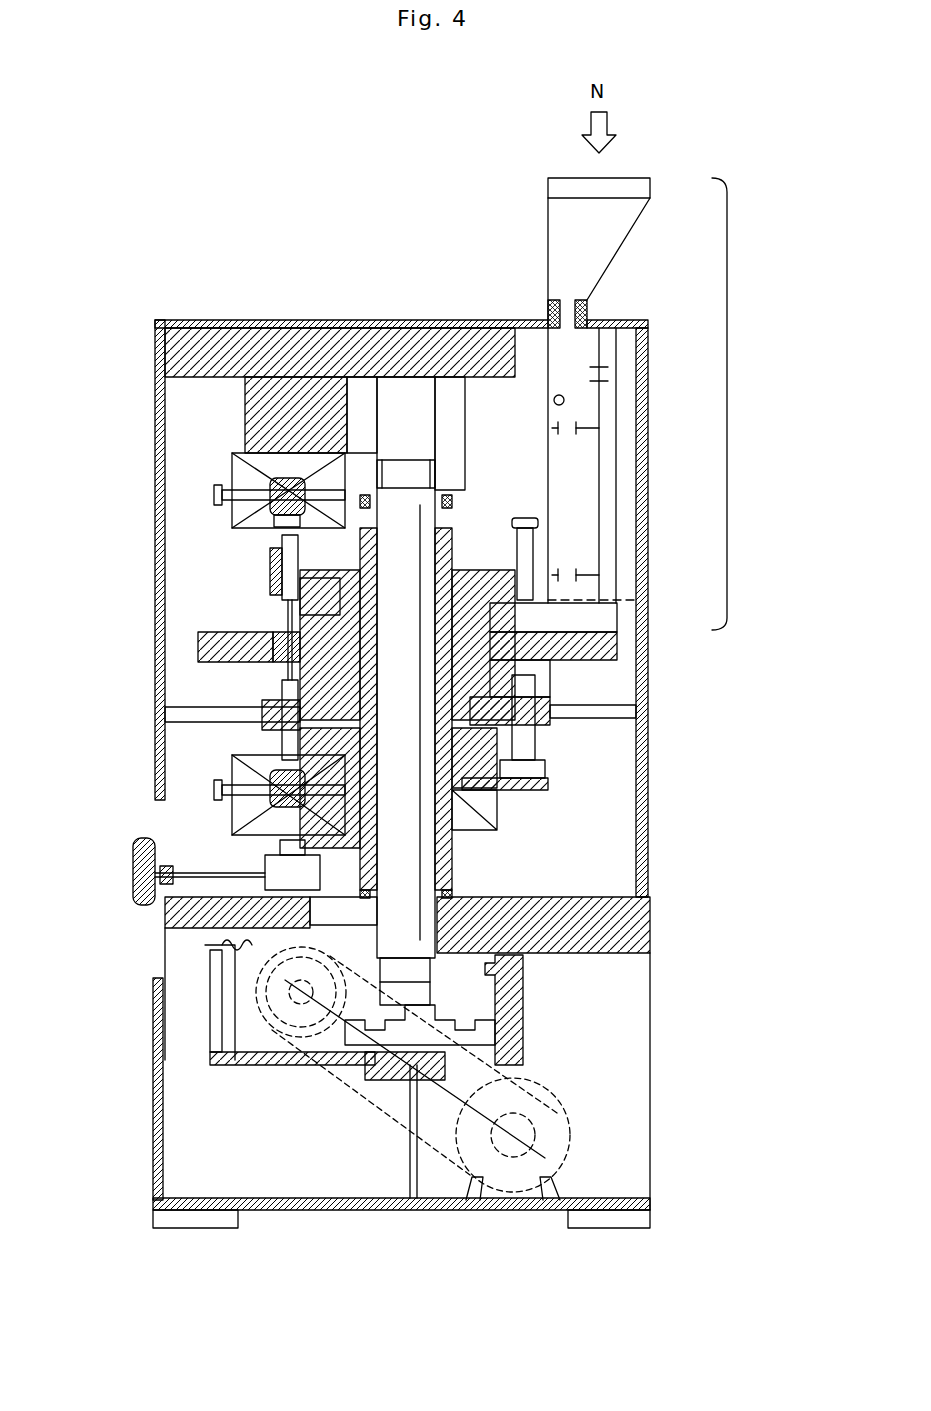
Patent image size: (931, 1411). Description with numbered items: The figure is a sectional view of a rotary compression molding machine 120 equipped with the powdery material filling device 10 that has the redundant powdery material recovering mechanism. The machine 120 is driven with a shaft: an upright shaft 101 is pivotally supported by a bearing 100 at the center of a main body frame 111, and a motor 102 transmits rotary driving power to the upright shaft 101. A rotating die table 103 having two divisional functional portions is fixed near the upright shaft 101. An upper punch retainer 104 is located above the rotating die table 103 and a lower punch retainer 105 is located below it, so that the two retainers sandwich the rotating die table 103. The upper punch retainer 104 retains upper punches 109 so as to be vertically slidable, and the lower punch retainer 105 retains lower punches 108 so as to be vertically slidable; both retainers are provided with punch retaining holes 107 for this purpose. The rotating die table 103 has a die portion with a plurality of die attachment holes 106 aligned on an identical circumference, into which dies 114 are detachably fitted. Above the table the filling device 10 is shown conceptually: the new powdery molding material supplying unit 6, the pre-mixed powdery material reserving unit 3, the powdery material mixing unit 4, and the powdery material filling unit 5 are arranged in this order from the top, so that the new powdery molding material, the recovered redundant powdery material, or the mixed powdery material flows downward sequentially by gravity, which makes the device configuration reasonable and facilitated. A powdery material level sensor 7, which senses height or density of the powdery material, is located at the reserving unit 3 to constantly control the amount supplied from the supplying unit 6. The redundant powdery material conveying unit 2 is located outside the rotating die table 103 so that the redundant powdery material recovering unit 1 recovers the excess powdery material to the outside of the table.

The redundant powdery material recovering unit 1 is at (600, 600).
The redundant powdery material conveying unit 2 is at (607, 527).
The pre-mixed powdery material reserving unit 3 is at (570, 360).
The powdery material mixing unit 4 is at (565, 480).
The powdery material filling unit 5 is at (575, 622).
The new powdery molding material supplying unit 6 is at (570, 247).
The powdery material level sensor 7 is at (565, 400).
The powdery material filling device 10 is at (728, 405).
The bearing 100 is at (523, 1075).
The upright shaft 101 is at (415, 810).
The motor 102 is at (555, 1155).
The rotating die table 103 is at (600, 660).
The upper punch retainer 104 is at (275, 582).
The lower punch retainer 105 is at (278, 688).
The die attachment holes 106 is at (278, 628).
The punch retaining holes 107 is at (540, 690).
The lower punches 108 is at (290, 740).
The upper punches 109 is at (280, 545).
The main body frame 111 is at (213, 348).
The dies 114 is at (278, 650).
The rotary compression molding machine 120 is at (708, 148).